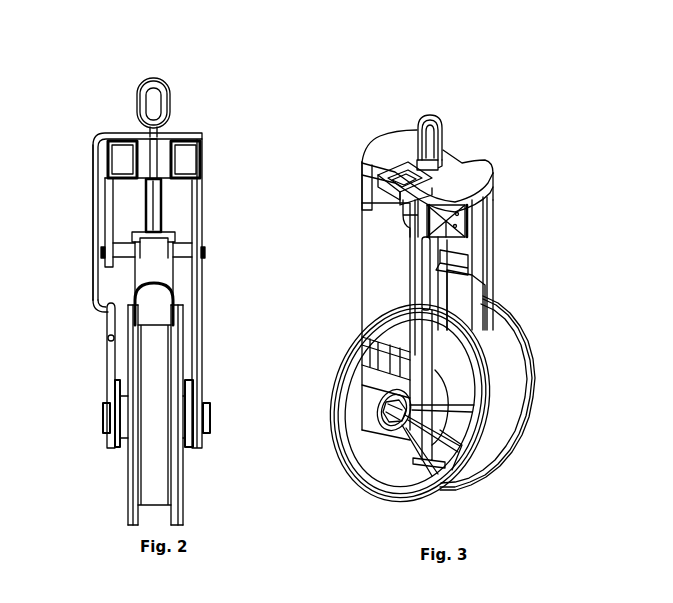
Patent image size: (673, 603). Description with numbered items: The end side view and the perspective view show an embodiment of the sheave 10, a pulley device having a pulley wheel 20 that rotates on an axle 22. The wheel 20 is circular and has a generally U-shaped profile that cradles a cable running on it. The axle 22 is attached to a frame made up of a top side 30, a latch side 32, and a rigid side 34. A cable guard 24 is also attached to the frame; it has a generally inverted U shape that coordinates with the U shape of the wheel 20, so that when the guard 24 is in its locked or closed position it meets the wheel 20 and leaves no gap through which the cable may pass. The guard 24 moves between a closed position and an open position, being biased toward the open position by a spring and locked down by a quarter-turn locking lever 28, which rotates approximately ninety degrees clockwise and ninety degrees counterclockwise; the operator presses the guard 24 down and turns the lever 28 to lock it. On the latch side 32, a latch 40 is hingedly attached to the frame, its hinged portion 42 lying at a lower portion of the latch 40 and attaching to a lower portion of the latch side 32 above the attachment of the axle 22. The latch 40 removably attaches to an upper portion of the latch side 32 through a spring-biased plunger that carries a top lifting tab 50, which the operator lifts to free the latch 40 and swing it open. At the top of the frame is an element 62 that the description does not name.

In FIG. 2, the sheave 10 is at (108, 74).
In FIG. 3, the sheave 10 is at (390, 108).
In FIG. 2, the pulley wheel 20 is at (158, 478).
In FIG. 3, the pulley wheel 20 is at (495, 402).
In FIG. 2, the axle 22 is at (206, 419).
In FIG. 3, the axle 22 is at (393, 425).
In FIG. 2, the cable guard 24 is at (150, 273).
In FIG. 3, the cable guard 24 is at (468, 288).
In FIG. 3, the locking lever 28 is at (463, 258).
In FIG. 2, the top side 30 is at (122, 148).
In FIG. 3, the top side 30 is at (387, 160).
In FIG. 2, the latch side 32 is at (95, 205).
In FIG. 3, the latch side 32 is at (383, 278).
In FIG. 2, the rigid side 34 is at (198, 205).
In FIG. 2, the latch 40 is at (95, 302).
In FIG. 3, the latch 40 is at (382, 320).
In FIG. 2, the hinged portion 42 is at (108, 343).
In FIG. 3, the hinged portion 42 is at (357, 343).
In FIG. 3, the lifting tab 50 is at (380, 185).
In FIG. 2, the attachment eye 62 is at (163, 80).
In FIG. 3, the attachment eye 62 is at (440, 130).